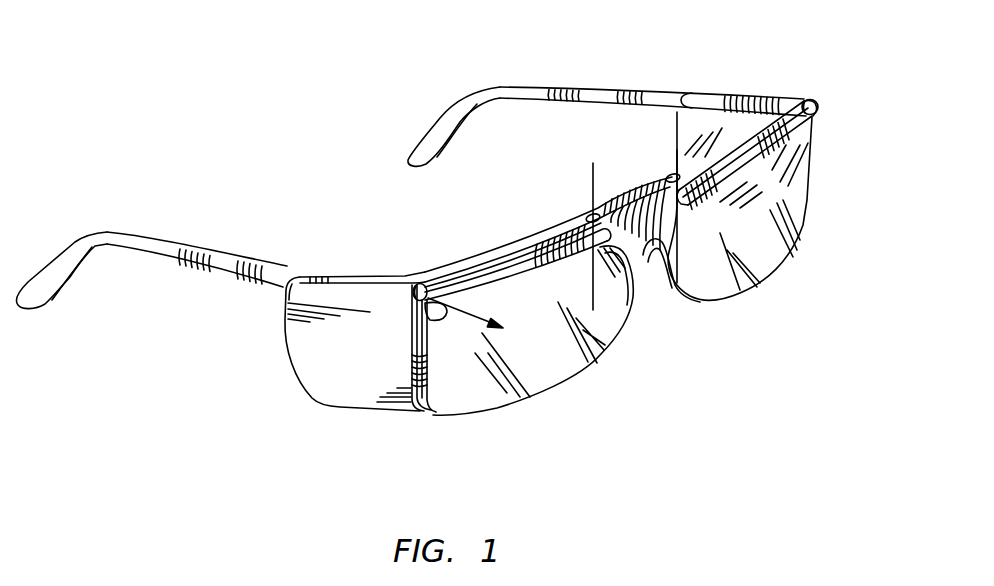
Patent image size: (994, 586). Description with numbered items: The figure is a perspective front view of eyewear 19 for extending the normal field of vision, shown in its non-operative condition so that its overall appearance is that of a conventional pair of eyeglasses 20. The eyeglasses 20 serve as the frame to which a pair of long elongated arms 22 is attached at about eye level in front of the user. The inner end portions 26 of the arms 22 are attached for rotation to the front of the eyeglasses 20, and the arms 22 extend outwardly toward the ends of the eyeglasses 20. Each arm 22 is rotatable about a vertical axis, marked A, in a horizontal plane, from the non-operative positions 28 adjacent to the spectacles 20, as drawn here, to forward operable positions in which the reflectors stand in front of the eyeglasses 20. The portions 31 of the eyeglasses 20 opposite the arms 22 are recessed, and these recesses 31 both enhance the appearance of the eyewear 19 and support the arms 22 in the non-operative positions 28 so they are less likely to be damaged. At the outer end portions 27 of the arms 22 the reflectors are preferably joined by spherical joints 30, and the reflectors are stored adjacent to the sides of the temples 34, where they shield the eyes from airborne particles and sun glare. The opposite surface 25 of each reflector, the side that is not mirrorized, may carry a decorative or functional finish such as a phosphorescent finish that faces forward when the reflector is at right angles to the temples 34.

The eyewear 19 is at (266, 497).
The eyeglasses 20 is at (570, 380).
The arms 22 is at (475, 297).
The opposite surface 25 is at (323, 370).
The inner end portions 26 is at (588, 213).
The outer end portions 27 is at (424, 283).
The non-operative positions 28 is at (507, 280).
The spherical joints 30 is at (414, 286).
The recesses 31 is at (515, 263).
The temples 34 is at (205, 252).